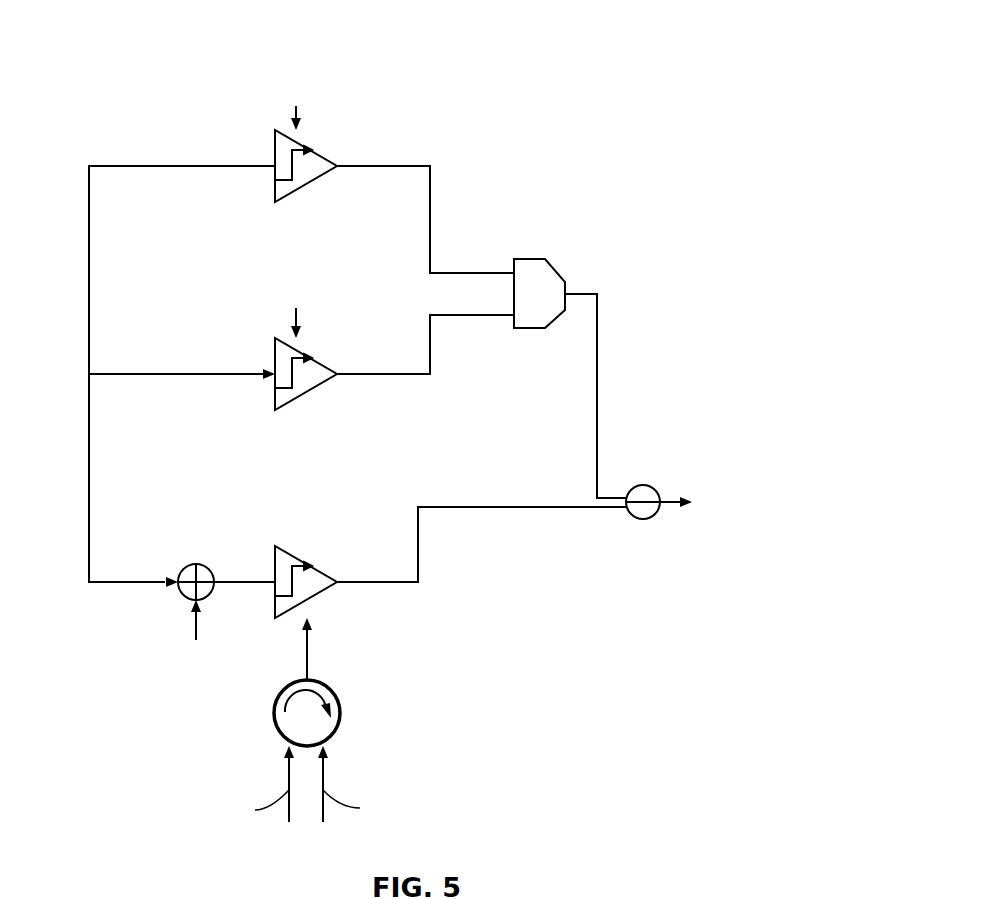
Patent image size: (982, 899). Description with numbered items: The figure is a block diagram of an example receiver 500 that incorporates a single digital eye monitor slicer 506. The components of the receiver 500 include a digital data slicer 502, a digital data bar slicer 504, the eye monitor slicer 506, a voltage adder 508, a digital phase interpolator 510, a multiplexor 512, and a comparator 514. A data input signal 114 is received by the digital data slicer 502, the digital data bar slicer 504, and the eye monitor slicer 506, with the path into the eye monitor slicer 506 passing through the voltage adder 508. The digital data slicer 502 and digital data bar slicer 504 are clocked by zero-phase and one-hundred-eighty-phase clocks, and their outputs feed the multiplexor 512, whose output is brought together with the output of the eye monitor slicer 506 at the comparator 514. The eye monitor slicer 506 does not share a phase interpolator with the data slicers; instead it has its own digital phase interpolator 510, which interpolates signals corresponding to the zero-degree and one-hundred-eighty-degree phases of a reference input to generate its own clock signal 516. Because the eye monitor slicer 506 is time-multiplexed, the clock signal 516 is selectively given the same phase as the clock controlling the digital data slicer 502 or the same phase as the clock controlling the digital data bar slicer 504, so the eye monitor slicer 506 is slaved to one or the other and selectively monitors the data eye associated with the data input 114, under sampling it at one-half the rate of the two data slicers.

The receiver 500 is at (738, 45).
The data input signal 114 is at (89, 340).
The digital data slicer 502 is at (275, 150).
The digital data bar slicer 504 is at (275, 357).
The digital eye monitor slicer 506 is at (275, 565).
The voltage adder 508 is at (185, 596).
The digital phase interpolator 510 is at (335, 690).
The multiplexor 512 is at (530, 259).
The comparator 514 is at (655, 491).
The clock signal 516 is at (307, 675).